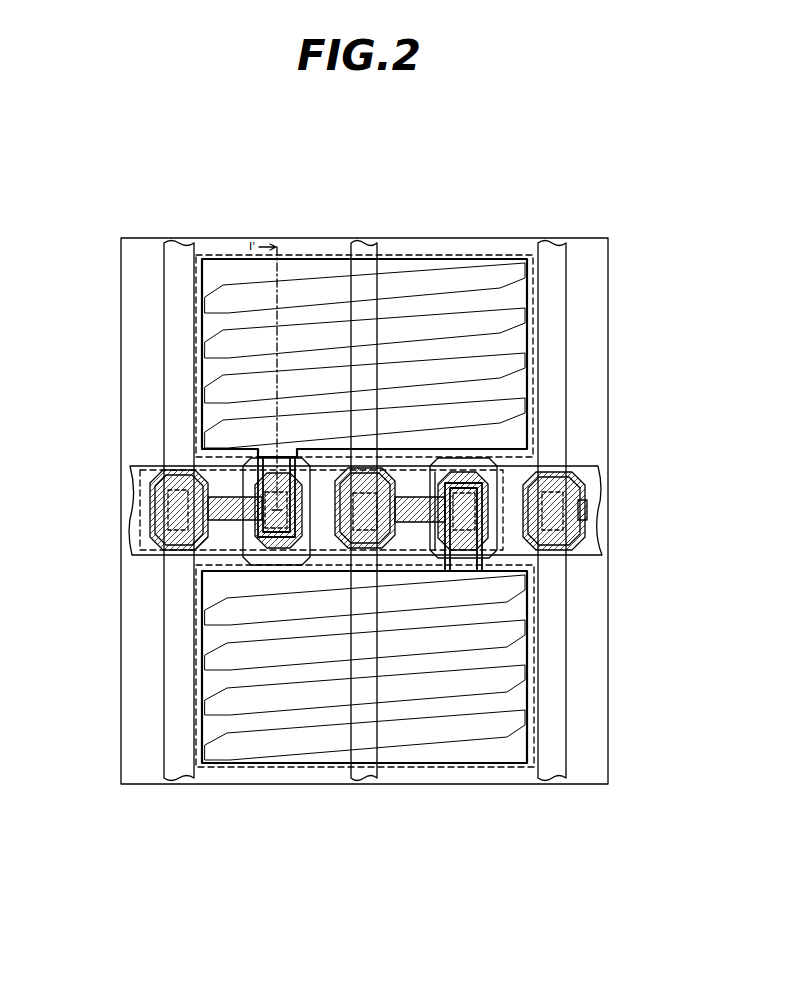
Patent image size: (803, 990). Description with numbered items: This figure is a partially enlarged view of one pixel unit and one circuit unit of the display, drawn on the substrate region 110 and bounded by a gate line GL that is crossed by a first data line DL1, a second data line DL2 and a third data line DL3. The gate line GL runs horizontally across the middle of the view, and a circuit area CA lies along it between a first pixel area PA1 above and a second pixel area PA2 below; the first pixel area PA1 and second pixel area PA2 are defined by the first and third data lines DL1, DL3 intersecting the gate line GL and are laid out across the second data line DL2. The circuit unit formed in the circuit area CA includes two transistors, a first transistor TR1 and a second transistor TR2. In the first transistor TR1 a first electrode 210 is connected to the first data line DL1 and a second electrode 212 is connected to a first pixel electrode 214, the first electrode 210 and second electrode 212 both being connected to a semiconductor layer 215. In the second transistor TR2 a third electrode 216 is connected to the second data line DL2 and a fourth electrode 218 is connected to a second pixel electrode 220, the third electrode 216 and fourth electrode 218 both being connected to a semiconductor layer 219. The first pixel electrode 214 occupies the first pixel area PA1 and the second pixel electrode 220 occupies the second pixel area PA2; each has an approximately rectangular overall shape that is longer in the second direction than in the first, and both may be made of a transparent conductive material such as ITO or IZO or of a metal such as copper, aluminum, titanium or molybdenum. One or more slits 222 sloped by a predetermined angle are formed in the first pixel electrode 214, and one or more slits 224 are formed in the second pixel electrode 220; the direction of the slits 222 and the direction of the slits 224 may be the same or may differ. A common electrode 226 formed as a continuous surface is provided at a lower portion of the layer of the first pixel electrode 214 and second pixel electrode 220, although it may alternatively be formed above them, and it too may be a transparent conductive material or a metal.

The substrate 110 is at (608, 270).
The first electrode 210 is at (150, 530).
The second electrode 212 is at (270, 457).
The first pixel electrode 214 is at (293, 258).
The semiconductor layer 215 is at (220, 495).
The third electrode 216 is at (380, 548).
The fourth electrode 218 is at (468, 562).
The semiconductor layer 219 is at (408, 493).
The second pixel electrode 220 is at (287, 767).
The slits 222 is at (203, 308).
The slits 224 is at (203, 752).
The common electrode 226 is at (430, 254).
The first data line DL1 is at (178, 495).
The second data line DL2 is at (365, 495).
The third data line DL3 is at (549, 495).
The gate line GL is at (343, 510).
The circuit area CA is at (132, 473).
The first pixel area PA1 is at (210, 255).
The second pixel area PA2 is at (242, 767).
The first transistor TR1 is at (261, 511).
The second transistor TR2 is at (447, 508).